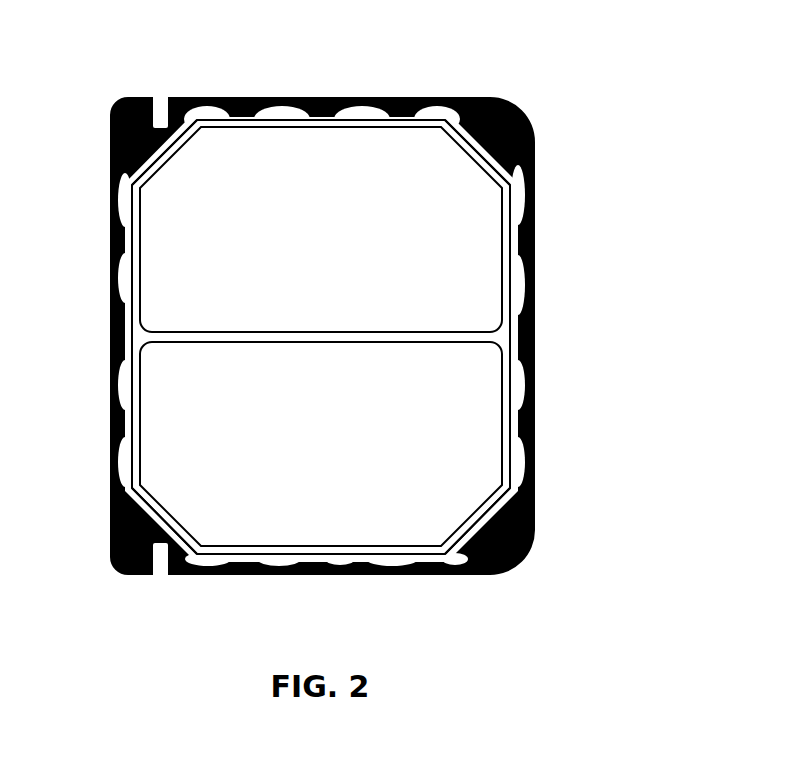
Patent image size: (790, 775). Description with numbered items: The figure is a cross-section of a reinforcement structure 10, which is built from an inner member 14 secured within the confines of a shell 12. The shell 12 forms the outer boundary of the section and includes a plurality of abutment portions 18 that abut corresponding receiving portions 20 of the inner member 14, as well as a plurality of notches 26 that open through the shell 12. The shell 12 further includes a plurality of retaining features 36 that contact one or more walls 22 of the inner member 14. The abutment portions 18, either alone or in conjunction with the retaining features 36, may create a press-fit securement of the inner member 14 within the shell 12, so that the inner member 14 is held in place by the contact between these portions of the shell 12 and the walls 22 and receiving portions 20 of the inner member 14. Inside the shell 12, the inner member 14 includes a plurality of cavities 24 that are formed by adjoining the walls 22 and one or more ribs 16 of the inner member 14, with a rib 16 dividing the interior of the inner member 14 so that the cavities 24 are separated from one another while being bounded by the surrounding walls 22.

The reinforcement structure 10 is at (562, 109).
The shell 12 is at (541, 286).
The inner member 14 is at (140, 333).
The ribs 16 is at (287, 336).
The abutment portions 18 is at (240, 98).
The receiving portions 20 is at (177, 152).
The walls 22 is at (347, 120).
The cavities 24 is at (310, 249).
The notches 26 is at (155, 108).
The retaining features 36 is at (322, 122).